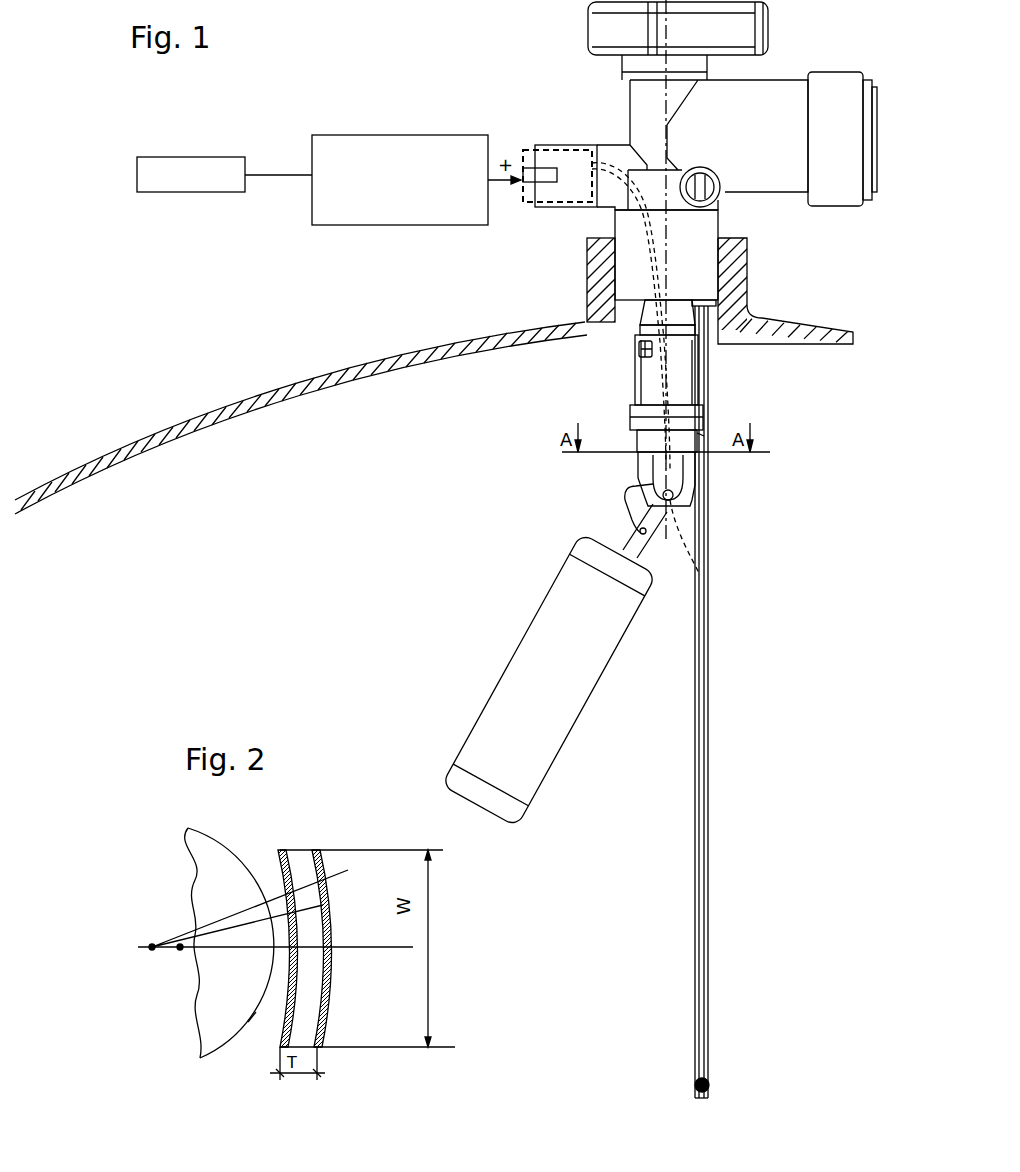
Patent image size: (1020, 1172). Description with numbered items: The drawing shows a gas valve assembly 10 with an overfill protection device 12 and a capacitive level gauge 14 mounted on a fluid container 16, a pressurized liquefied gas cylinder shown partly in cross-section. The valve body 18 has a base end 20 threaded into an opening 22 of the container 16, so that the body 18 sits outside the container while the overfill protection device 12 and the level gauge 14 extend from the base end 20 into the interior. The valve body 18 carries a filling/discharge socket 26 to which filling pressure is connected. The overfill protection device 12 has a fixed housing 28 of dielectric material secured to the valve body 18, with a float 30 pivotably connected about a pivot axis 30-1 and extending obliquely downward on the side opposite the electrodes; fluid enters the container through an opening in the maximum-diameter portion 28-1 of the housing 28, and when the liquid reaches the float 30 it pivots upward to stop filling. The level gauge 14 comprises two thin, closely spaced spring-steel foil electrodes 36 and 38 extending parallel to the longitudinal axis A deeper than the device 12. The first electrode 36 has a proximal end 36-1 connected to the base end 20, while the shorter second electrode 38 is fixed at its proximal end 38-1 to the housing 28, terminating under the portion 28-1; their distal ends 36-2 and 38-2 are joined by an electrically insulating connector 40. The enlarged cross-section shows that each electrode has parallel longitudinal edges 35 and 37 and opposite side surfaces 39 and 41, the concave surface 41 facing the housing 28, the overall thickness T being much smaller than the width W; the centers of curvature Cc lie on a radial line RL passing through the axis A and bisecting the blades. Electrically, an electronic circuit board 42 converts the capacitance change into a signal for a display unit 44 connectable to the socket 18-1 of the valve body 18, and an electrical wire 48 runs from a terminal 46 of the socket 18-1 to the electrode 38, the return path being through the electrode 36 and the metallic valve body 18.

In FIG. 1, the valve assembly 10 is at (608, 96).
In FIG. 1, the overfill protection device 12 is at (600, 498).
In FIG. 1, the capacitive level gauge 14 is at (730, 660).
In FIG. 1, the fluid container 16 is at (188, 418).
In FIG. 1, the valve body 18 is at (650, 113).
In FIG. 1, the electrical socket 18-1 is at (547, 207).
In FIG. 1, the base end 20 is at (632, 265).
In FIG. 1, the opening 22 is at (693, 286).
In FIG. 1, the filling/discharge socket 26 is at (837, 127).
In FIG. 1, the housing 28 is at (647, 380).
In FIG. 2, the housing 28 is at (235, 1040).
In FIG. 1, the maximum diameter portion 28-1 is at (640, 412).
In FIG. 1, the float 30 is at (523, 708).
In FIG. 1, the pivot axis 30-1 is at (668, 497).
In FIG. 2, the longitudinal edge 35 is at (312, 847).
In FIG. 1, the first electrode 36 is at (638, 352).
In FIG. 2, the first electrode 36 is at (326, 914).
In FIG. 1, the proximal end of first electrode 36-1 is at (708, 323).
In FIG. 1, the distal end of first electrode 36-2 is at (708, 1062).
In FIG. 2, the longitudinal edge 37 is at (317, 1055).
In FIG. 1, the second electrode 38 is at (699, 755).
In FIG. 2, the second electrode 38 is at (292, 960).
In FIG. 1, the proximal end of second electrode 38-1 is at (697, 433).
In FIG. 1, the distal end of second electrode 38-2 is at (697, 1066).
In FIG. 2, the side surface 39 is at (323, 872).
In FIG. 1, the electrically insulating connector 40 is at (701, 1098).
In FIG. 2, the concave side surface 41 is at (317, 993).
In FIG. 1, the electronic circuit board 42 is at (448, 135).
In FIG. 1, the display unit 44 is at (206, 157).
In FIG. 1, the electrical terminal 46 is at (527, 202).
In FIG. 1, the electrical wire 48 is at (670, 375).
In FIG. 2, the center of curvature Cc is at (150, 949).
In FIG. 2, the longitudinal axis A is at (178, 949).
In FIG. 2, the radial line RL is at (236, 949).